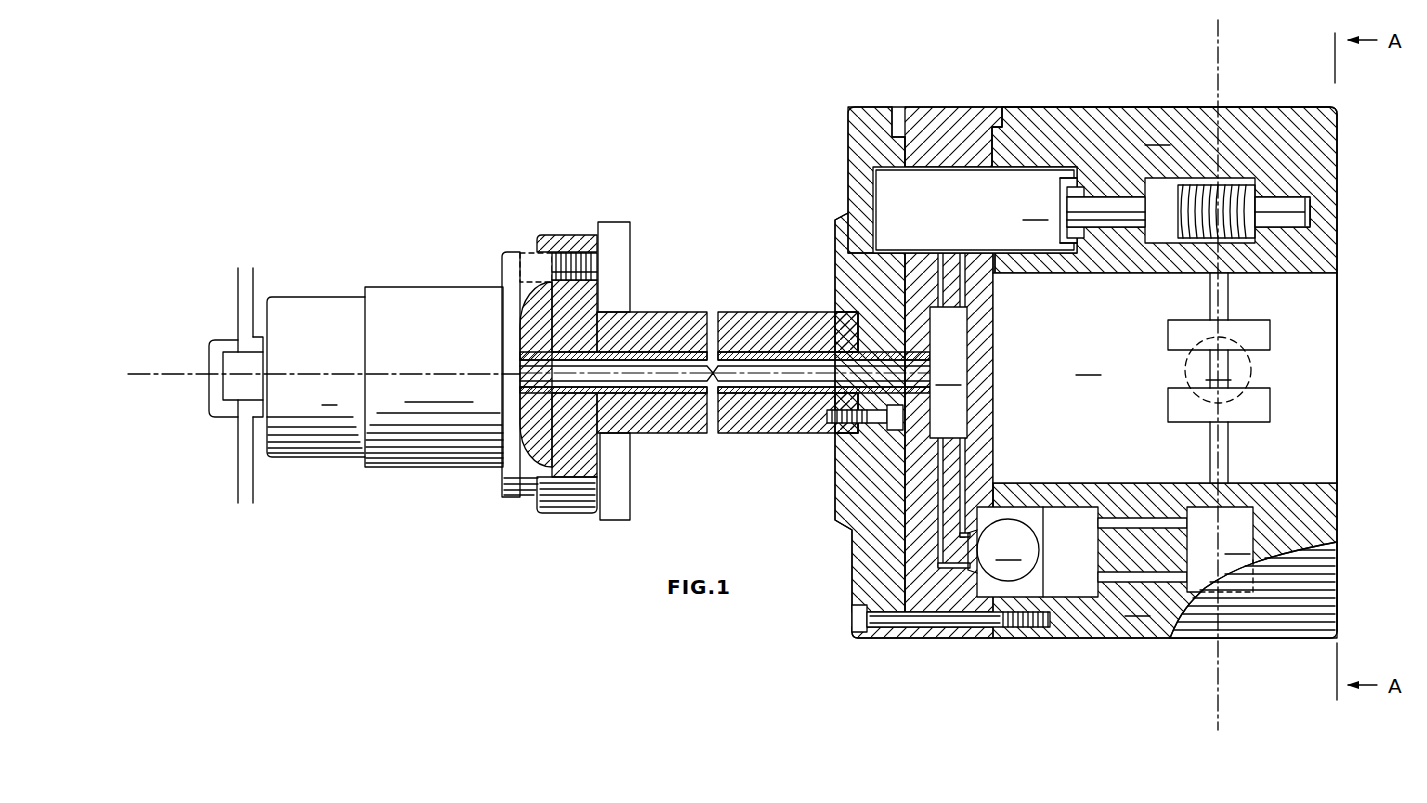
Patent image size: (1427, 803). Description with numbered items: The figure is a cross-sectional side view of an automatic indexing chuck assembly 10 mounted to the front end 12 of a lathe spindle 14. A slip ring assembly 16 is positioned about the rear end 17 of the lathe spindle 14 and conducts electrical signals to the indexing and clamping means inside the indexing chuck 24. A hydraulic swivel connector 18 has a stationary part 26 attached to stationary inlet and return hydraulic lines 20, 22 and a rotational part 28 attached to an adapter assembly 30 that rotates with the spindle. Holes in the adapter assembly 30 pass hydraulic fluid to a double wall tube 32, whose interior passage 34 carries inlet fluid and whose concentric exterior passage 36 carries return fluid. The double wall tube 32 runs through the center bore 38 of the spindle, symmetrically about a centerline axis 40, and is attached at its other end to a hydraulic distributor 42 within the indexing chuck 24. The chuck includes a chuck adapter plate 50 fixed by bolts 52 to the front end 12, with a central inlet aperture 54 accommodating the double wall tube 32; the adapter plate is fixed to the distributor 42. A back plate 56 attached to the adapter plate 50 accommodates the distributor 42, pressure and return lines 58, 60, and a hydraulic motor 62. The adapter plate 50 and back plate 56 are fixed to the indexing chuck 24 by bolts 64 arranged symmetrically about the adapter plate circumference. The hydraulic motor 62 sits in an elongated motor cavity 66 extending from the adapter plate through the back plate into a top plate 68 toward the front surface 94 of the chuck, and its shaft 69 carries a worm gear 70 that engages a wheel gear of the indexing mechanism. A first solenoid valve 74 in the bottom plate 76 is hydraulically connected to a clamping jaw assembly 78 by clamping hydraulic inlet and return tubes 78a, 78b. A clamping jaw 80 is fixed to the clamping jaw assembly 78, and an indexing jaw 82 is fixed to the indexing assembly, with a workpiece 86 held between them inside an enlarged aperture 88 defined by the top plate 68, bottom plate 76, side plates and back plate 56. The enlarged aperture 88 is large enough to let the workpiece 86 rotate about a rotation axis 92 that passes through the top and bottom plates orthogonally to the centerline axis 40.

The automatic indexing chuck assembly 10 is at (852, 95).
The front end 12 is at (862, 322).
The lathe spindle 14 is at (732, 312).
The slip ring assembly 16 is at (613, 225).
The rear end 17 is at (592, 226).
The hydraulic swivel connector 18 is at (385, 344).
The inlet hydraulic line 20 is at (238, 284).
The return hydraulic line 22 is at (238, 468).
The indexing chuck 24 is at (1156, 102).
The stationary part 26 is at (297, 302).
The rotational part 28 is at (432, 300).
The adapter assembly 30 is at (522, 248).
The double wall tube 32 is at (638, 345).
The interior passage 34 is at (578, 467).
The exterior passage 36 is at (535, 393).
The center bore 38 is at (662, 389).
The centerline axis 40 is at (131, 374).
The hydraulic distributor 42 is at (948, 372).
The chuck adapter plate 50 is at (876, 107).
The bolts 52 is at (867, 424).
The inlet aperture 54 is at (835, 222).
The back plate 56 is at (955, 107).
The pressure line 58 is at (953, 567).
The return line 60 is at (994, 295).
The hydraulic motor 62 is at (975, 210).
The bolts 64 is at (913, 620).
The elongated motor cavity 66 is at (1037, 168).
The top plate 68 is at (1164, 190).
The shaft 69 is at (1113, 207).
The worm gear 70 is at (1232, 186).
The first solenoid valve 74 is at (1033, 552).
The bottom plate 76 is at (1165, 560).
The clamping jaw assembly 78 is at (1220, 549).
The clamping hydraulic inlet tube 78a is at (1112, 582).
The clamping hydraulic return tube 78b is at (1130, 520).
The clamping jaw 80 is at (1267, 403).
The indexing jaw 82 is at (1263, 330).
The workpiece 86 is at (1218, 370).
The enlarged aperture 88 is at (1165, 378).
The rotation axis 92 is at (1220, 703).
The front surface 94 is at (1338, 167).